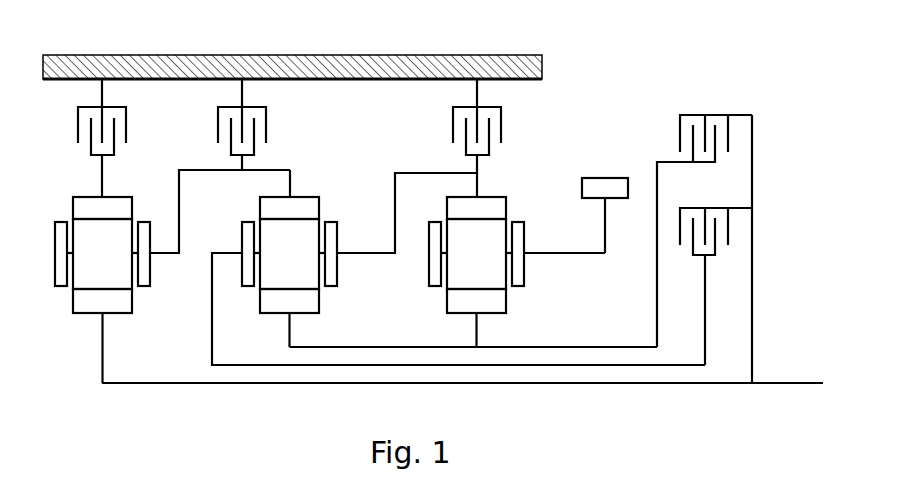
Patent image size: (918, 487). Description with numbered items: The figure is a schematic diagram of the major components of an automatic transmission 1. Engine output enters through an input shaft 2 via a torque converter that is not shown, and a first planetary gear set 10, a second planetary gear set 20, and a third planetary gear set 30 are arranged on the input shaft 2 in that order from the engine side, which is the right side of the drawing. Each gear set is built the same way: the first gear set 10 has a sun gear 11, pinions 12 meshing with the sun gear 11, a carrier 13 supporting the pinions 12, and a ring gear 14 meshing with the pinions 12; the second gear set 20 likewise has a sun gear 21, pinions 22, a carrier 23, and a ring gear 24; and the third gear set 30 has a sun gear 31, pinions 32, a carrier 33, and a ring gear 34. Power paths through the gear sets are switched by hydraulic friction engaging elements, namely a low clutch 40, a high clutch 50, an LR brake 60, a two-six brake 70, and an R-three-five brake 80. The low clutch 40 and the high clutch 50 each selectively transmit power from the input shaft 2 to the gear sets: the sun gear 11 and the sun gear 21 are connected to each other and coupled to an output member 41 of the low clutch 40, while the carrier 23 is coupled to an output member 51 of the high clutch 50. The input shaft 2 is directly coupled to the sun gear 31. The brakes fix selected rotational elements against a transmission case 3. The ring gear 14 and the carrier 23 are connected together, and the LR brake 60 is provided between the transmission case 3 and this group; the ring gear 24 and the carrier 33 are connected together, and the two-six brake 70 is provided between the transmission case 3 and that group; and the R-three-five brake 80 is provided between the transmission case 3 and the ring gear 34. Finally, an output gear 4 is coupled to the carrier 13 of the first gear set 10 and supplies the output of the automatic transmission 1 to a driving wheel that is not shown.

The automatic transmission 1 is at (730, 58).
The input shaft 2 is at (781, 382).
The transmission case 3 is at (391, 67).
The output gear 4 is at (610, 177).
The first planetary gear set 10 is at (465, 245).
The sun gear 11 is at (460, 315).
The pinions 12 is at (462, 273).
The carrier 13 is at (428, 263).
The ring gear 14 is at (447, 208).
The second planetary gear set 20 is at (274, 251).
The sun gear 21 is at (280, 307).
The pinions 22 is at (277, 280).
The carrier 23 is at (242, 272).
The ring gear 24 is at (258, 207).
The third planetary gear set 30 is at (96, 260).
The sun gear 31 is at (93, 305).
The pinions 32 is at (93, 273).
The carrier 33 is at (55, 260).
The ring gear 34 is at (72, 207).
The low clutch 40 is at (698, 163).
The output member of the low clutch 41 is at (657, 262).
The high clutch 50 is at (710, 258).
The output member of the high clutch 51 is at (674, 365).
The LR brake 60 is at (503, 124).
The 26 brake 70 is at (268, 127).
The R35 brake 80 is at (130, 126).